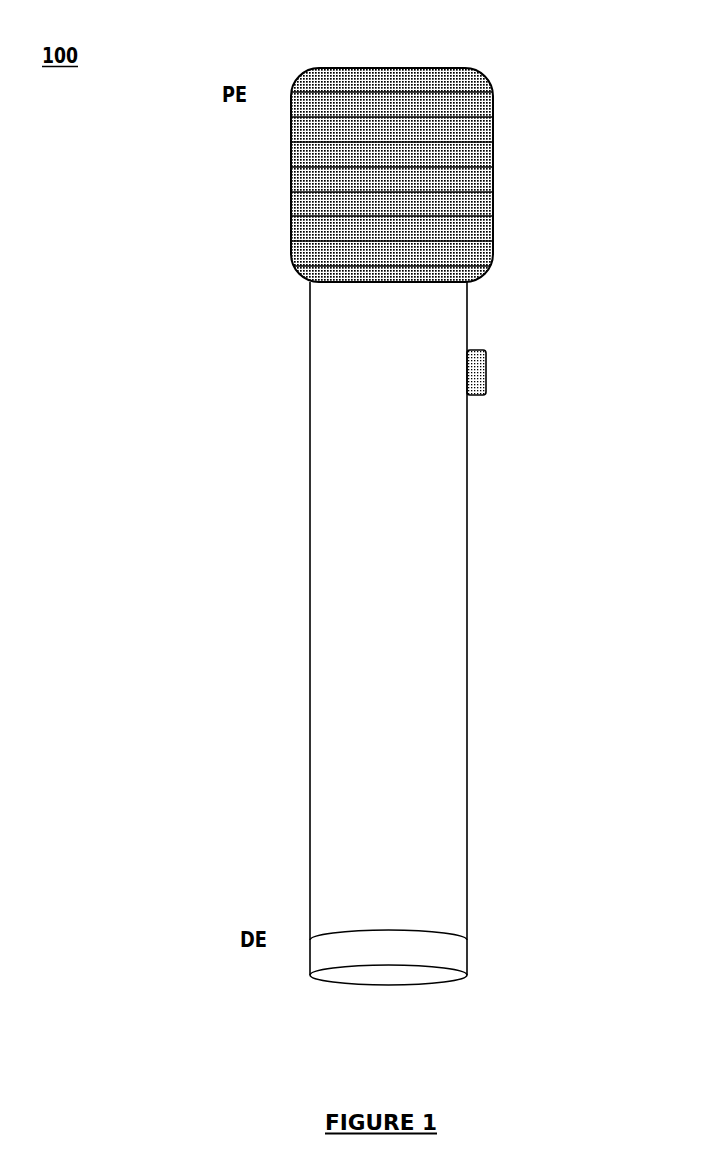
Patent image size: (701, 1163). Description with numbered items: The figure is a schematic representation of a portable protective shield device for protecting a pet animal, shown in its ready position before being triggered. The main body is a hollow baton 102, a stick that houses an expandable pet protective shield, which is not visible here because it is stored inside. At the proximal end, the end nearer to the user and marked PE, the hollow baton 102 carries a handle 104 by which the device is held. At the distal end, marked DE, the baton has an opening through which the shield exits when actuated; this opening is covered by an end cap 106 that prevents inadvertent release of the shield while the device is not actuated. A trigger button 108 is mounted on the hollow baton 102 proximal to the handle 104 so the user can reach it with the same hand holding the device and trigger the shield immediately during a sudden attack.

The hollow baton 102 is at (310, 477).
The handle 104 is at (493, 108).
The end cap 106 is at (458, 955).
The trigger button 108 is at (486, 372).